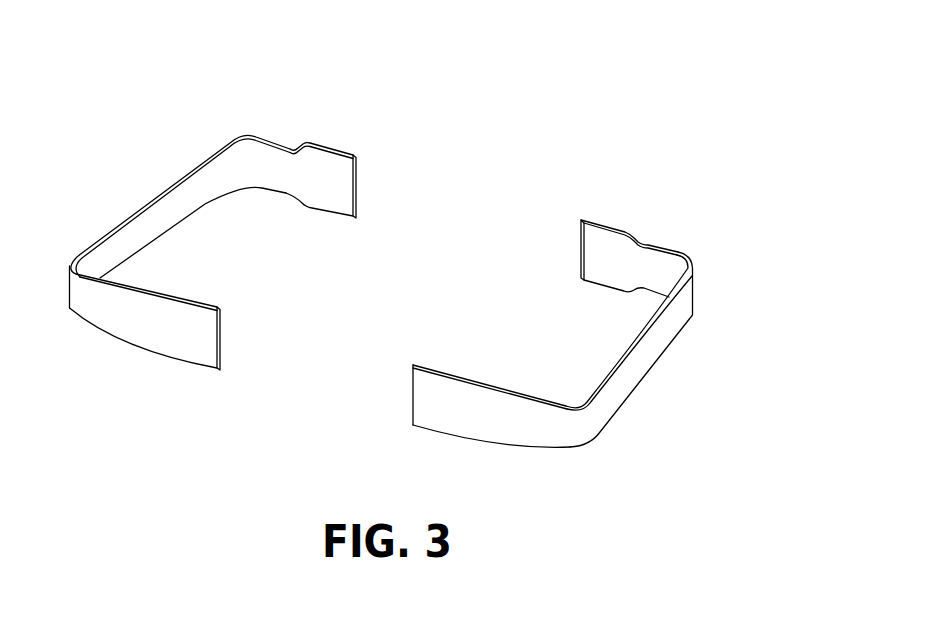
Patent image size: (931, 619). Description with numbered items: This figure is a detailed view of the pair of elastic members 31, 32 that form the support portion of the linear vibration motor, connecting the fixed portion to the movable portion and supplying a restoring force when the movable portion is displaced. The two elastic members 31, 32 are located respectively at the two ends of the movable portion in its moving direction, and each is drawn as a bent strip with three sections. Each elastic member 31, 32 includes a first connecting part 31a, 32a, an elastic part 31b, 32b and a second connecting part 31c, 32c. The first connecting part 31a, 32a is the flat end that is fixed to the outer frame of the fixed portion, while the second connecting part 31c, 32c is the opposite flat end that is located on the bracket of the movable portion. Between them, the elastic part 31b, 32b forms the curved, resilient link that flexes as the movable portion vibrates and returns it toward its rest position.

The elastic member 31 is at (222, 100).
The first connecting part 31a is at (188, 315).
The elastic part 31b is at (162, 210).
The second connecting part 31c is at (328, 165).
The elastic member 32 is at (700, 196).
The first connecting part 32a is at (435, 387).
The elastic part 32b is at (642, 355).
The second connecting part 32c is at (595, 237).